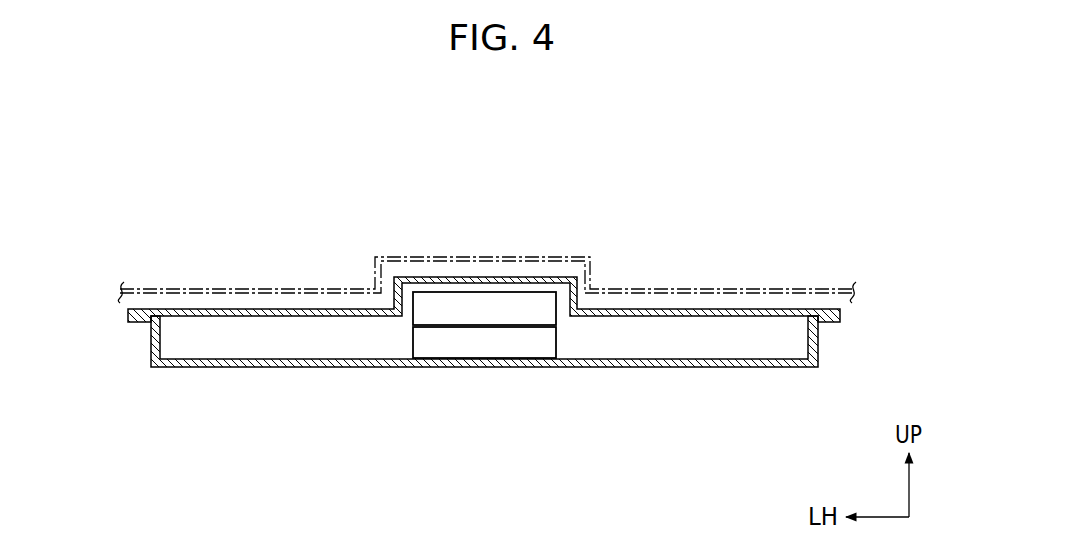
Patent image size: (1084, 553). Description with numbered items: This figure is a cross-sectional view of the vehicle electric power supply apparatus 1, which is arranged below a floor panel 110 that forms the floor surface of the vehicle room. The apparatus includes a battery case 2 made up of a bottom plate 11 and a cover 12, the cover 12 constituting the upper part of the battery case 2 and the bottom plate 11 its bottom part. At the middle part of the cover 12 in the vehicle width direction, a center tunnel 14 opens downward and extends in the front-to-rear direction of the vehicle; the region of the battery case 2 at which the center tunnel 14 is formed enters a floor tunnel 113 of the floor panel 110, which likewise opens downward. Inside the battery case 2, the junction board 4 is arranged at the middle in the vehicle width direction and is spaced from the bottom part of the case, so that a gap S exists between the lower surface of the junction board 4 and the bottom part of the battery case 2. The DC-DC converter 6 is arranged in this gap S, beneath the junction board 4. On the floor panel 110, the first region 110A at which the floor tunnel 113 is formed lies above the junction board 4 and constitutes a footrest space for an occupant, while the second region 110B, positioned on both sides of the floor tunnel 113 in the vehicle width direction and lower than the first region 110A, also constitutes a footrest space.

The vehicle electric power supply apparatus 1 is at (877, 212).
The battery case 2 is at (808, 303).
The junction board 4 is at (514, 300).
The DC-DC converter 6 is at (505, 352).
The bottom plate 11 is at (695, 367).
The cover 12 is at (735, 309).
The center tunnel 14 is at (408, 316).
The floor panel 110 is at (222, 286).
The first region 110A is at (445, 256).
The second region 110B is at (303, 288).
The floor tunnel 113 is at (582, 293).
The gap S is at (464, 364).